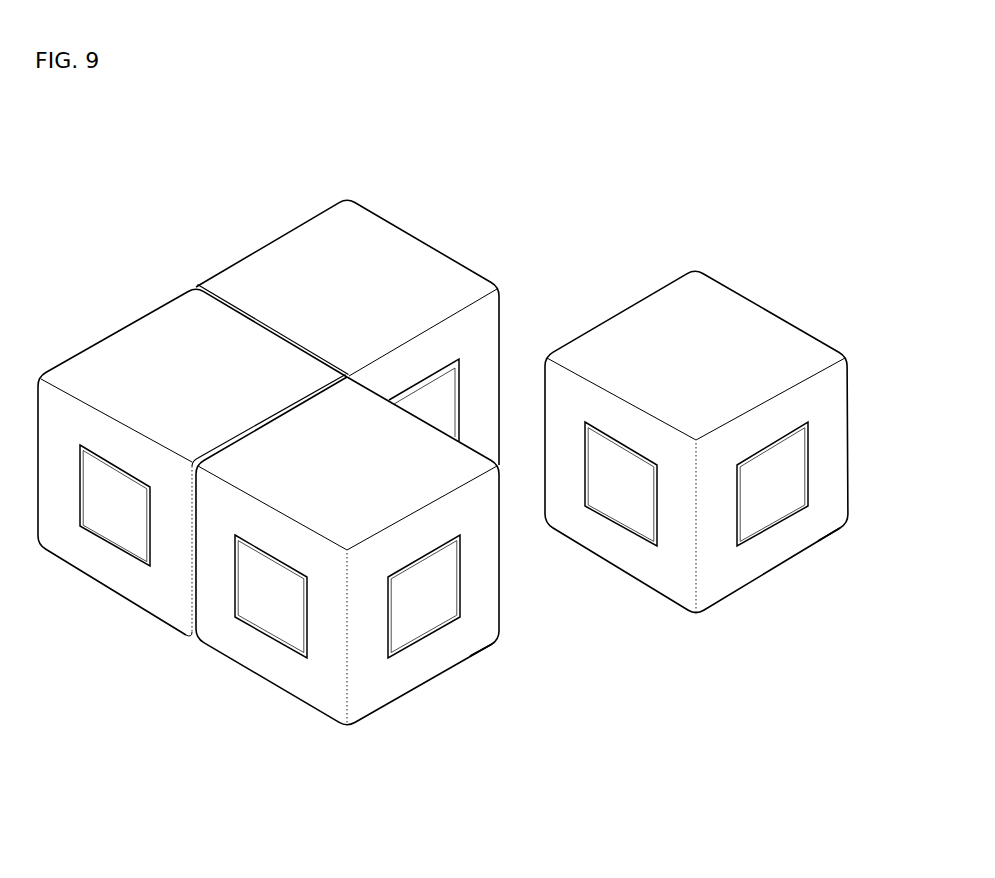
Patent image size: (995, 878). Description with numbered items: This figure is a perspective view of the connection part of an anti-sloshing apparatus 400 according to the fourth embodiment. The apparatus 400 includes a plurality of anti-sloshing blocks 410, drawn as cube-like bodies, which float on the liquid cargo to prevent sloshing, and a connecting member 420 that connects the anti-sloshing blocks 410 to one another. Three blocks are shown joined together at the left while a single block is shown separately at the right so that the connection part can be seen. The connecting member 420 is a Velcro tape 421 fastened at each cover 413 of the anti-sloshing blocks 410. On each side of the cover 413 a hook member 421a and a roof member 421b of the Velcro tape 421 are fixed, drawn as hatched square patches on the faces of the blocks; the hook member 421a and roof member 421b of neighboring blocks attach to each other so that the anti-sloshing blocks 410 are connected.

The anti-sloshing apparatus 400 is at (577, 155).
The anti-sloshing block 410 is at (455, 490).
The cover 413 is at (467, 652).
The hook member 421a is at (282, 636).
The roof member 421b is at (427, 625).
The Velcro tape 421 is at (297, 774).
The connecting member 420 is at (355, 806).